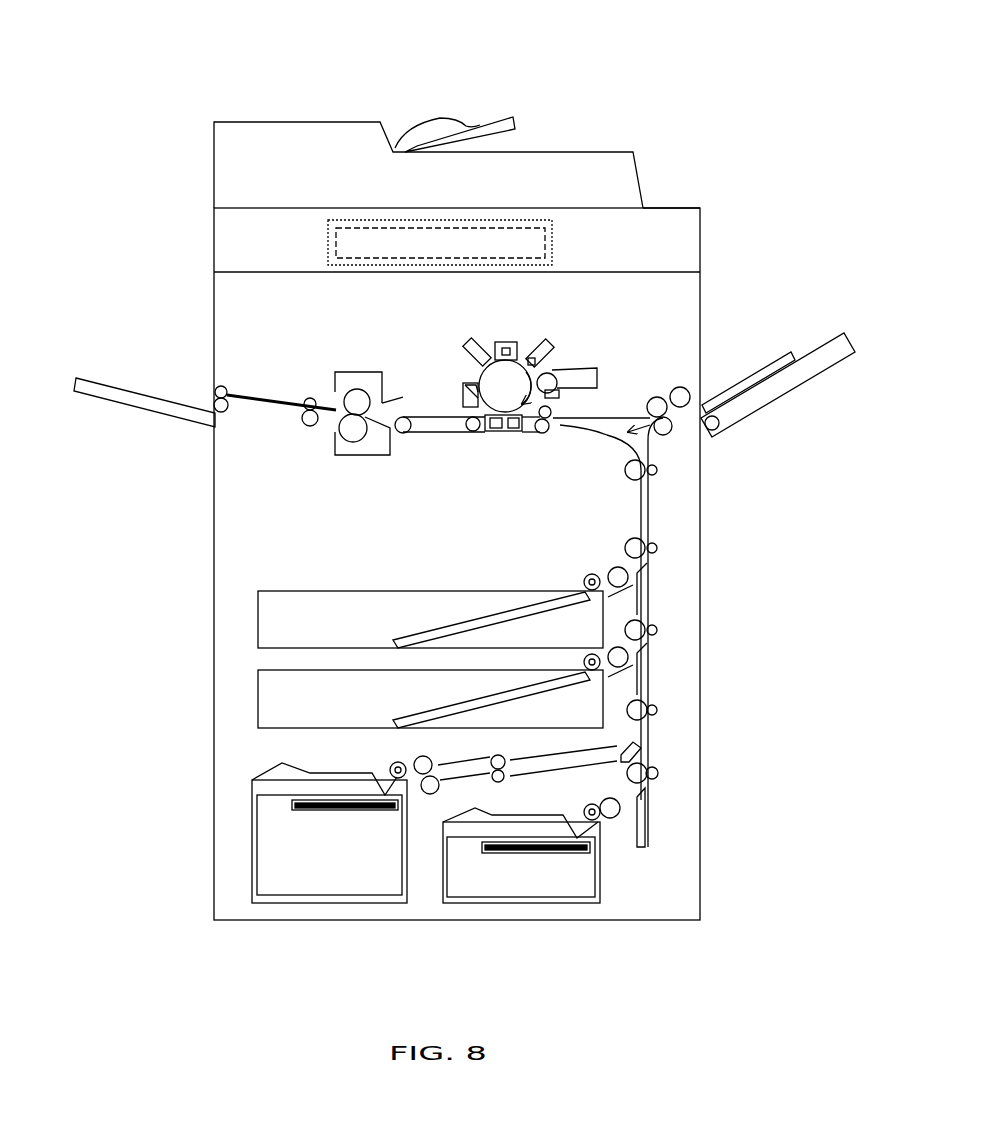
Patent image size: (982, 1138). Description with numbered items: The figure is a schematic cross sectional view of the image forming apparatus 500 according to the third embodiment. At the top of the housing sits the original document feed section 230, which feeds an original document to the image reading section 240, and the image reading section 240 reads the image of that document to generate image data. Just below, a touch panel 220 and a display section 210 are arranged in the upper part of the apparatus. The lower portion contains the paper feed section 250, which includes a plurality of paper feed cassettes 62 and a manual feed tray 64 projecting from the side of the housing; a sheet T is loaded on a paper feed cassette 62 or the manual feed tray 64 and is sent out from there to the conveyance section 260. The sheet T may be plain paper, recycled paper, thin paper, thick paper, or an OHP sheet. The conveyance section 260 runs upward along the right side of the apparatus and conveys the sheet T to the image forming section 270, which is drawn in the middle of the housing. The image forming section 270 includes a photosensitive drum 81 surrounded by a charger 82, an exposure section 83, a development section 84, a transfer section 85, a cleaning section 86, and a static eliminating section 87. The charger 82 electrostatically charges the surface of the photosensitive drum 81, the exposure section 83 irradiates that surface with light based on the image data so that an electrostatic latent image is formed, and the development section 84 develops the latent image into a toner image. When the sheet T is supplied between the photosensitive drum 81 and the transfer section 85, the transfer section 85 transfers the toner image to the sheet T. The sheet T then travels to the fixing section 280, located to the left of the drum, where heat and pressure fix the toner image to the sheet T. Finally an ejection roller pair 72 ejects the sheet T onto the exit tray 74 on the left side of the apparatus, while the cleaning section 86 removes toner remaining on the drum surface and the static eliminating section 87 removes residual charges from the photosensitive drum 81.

The image forming apparatus 500 is at (490, 85).
The original document feed section 230 is at (618, 152).
The image reading section 240 is at (657, 217).
The touch panel 220 is at (328, 232).
The display section 210 is at (552, 242).
The image forming section 270 is at (428, 358).
The photosensitive drum 81 is at (480, 375).
The charger 82 is at (506, 342).
The exposure section 83 is at (545, 343).
The development section 84 is at (597, 378).
The transfer section 85 is at (503, 432).
The cleaning section 86 is at (463, 393).
The static eliminating section 87 is at (468, 340).
The fixing section 280 is at (345, 465).
The ejection roller pair 72 is at (205, 392).
The exit tray 74 is at (135, 407).
The manual feed tray 64 is at (798, 350).
The paper feed cassette 62 is at (258, 606).
The paper feed section 250 is at (272, 752).
The conveyance section 260 is at (684, 668).
The sheet T is at (754, 372).